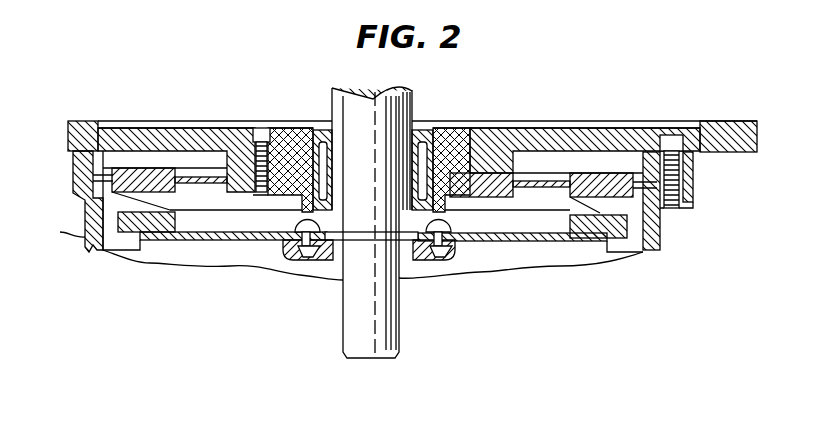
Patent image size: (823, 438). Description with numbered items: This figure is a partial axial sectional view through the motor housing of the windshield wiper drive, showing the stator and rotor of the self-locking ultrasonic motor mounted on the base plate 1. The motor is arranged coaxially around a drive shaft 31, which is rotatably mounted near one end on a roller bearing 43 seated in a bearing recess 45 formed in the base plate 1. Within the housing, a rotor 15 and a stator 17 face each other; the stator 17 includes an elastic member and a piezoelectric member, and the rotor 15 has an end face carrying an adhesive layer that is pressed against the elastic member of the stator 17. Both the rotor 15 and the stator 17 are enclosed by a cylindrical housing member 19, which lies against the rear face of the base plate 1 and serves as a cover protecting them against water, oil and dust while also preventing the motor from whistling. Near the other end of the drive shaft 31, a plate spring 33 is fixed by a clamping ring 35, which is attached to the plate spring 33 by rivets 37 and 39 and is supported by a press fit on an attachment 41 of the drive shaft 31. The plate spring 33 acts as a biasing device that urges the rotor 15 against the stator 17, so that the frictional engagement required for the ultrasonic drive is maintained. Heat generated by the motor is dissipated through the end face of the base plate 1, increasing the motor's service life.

The base plate 1 is at (562, 141).
The rotor 15 is at (613, 238).
The stator 17 is at (643, 191).
The housing member 19 is at (82, 235).
The drive shaft 31 is at (397, 118).
The plate spring 33 is at (533, 241).
The clamping ring 35 is at (272, 252).
The rivet 37 is at (302, 258).
The rivet 39 is at (435, 253).
The attachment 41 is at (355, 252).
The roller bearing 43 is at (432, 160).
The bearing recess 45 is at (291, 128).